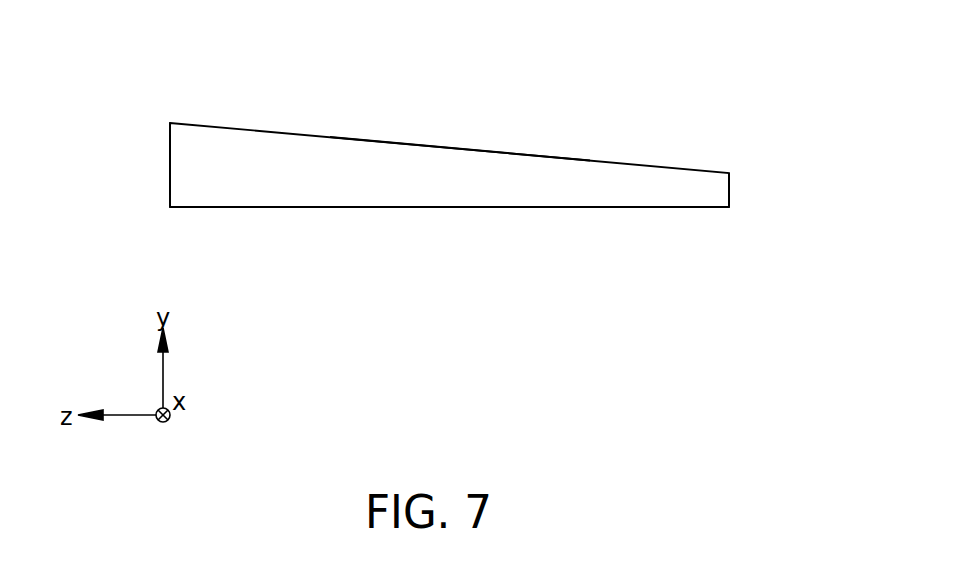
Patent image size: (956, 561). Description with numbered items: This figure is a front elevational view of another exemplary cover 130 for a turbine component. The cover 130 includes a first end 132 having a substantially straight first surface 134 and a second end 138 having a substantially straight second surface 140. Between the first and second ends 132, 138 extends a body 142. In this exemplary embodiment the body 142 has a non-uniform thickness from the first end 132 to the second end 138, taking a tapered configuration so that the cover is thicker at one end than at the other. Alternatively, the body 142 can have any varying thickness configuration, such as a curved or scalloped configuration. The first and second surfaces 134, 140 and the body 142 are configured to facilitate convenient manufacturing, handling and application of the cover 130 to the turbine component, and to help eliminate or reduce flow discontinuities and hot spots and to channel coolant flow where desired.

The cover 130 is at (363, 157).
The first end 132 is at (158, 134).
The first straight surface 134 is at (170, 165).
The second end 138 is at (729, 173).
The second straight surface 140 is at (730, 187).
The body 142 is at (445, 166).